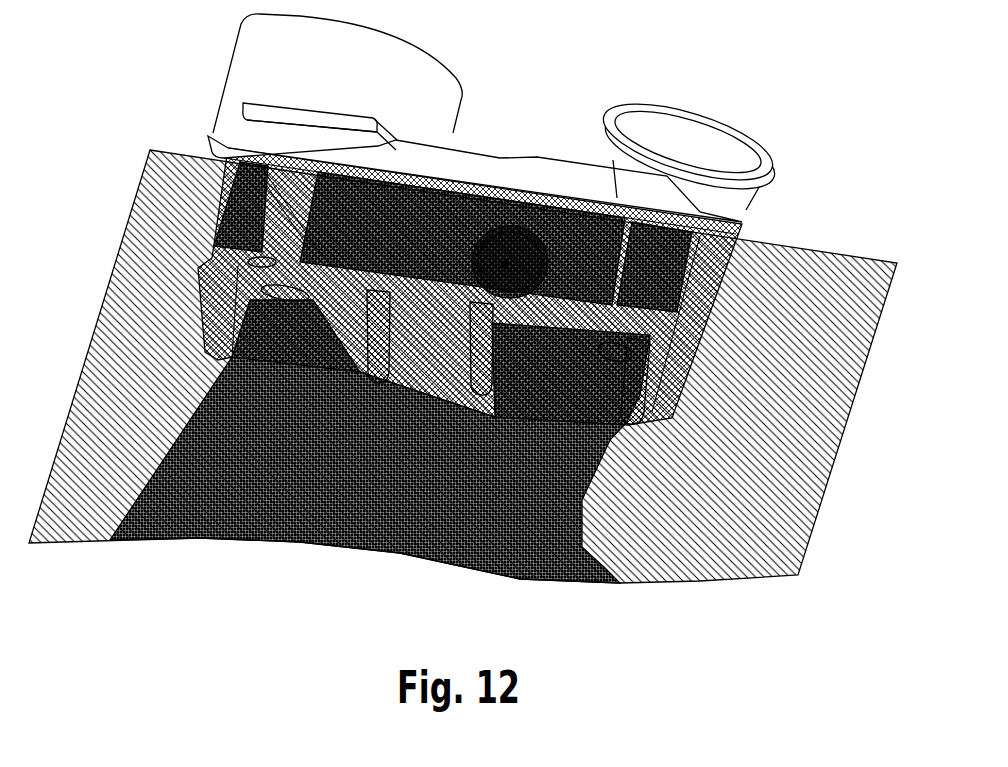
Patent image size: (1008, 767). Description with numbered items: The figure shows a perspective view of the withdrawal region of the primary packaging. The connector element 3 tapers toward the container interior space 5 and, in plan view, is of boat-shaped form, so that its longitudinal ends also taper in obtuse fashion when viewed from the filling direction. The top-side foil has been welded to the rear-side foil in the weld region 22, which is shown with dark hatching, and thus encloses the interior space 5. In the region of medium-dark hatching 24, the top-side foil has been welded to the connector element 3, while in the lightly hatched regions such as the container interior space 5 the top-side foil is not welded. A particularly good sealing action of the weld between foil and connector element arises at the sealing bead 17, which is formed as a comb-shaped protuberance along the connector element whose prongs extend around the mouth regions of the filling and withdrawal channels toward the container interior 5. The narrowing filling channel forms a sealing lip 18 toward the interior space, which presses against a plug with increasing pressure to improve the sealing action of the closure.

The connector element 3 is at (506, 126).
The container interior space 5 is at (230, 503).
The sealing bead 17 is at (268, 270).
The sealing lip 18 is at (612, 358).
The weld region 22 is at (163, 185).
The medium-dark hatching region 24 is at (248, 256).